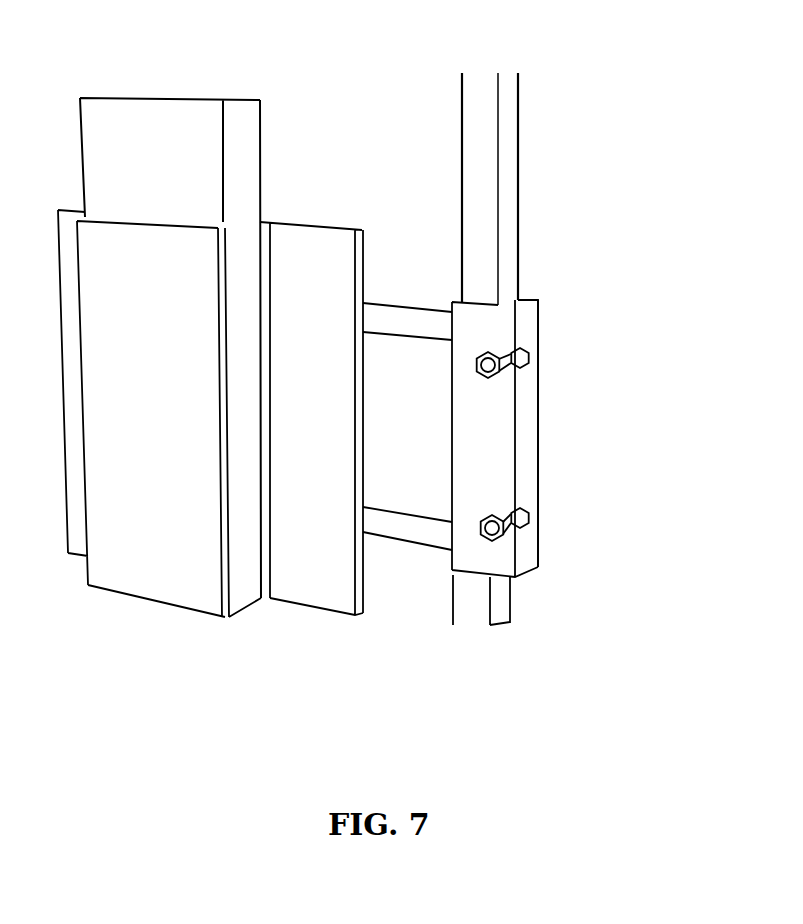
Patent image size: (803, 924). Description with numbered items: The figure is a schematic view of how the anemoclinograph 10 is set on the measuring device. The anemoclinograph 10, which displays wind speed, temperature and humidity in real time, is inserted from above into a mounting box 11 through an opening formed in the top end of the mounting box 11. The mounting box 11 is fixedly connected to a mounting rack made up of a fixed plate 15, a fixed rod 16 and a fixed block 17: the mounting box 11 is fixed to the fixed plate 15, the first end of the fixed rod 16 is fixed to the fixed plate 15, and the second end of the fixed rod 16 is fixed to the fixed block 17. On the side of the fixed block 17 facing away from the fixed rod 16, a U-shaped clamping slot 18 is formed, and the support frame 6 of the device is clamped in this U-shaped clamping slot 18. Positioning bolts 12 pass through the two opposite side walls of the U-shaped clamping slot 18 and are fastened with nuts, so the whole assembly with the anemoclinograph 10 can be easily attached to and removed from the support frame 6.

The support frame 6 is at (480, 108).
The anemoclinograph 10 is at (232, 139).
The mounting box 11 is at (172, 578).
The positioning bolt 12 is at (512, 535).
The fixed plate 15 is at (308, 558).
The fixed rod 16 is at (399, 318).
The fixed block 17 is at (478, 442).
The U-shaped clamping slot 18 is at (523, 475).